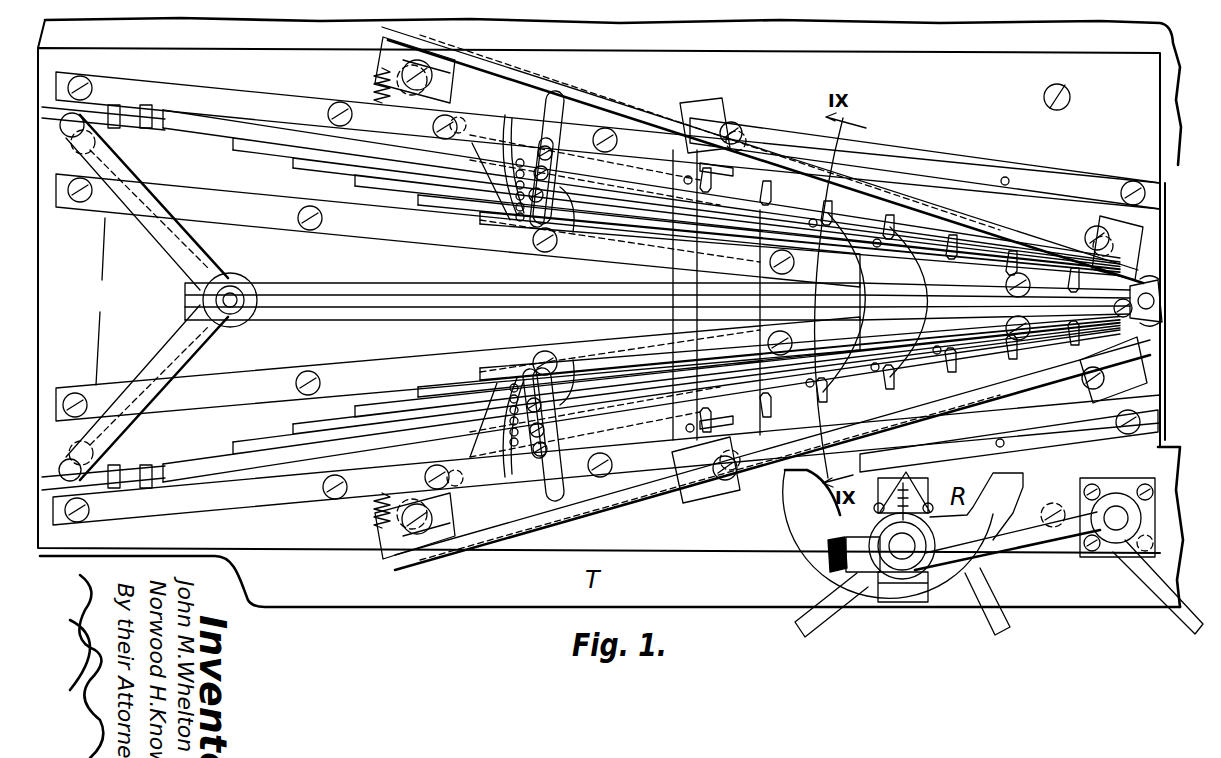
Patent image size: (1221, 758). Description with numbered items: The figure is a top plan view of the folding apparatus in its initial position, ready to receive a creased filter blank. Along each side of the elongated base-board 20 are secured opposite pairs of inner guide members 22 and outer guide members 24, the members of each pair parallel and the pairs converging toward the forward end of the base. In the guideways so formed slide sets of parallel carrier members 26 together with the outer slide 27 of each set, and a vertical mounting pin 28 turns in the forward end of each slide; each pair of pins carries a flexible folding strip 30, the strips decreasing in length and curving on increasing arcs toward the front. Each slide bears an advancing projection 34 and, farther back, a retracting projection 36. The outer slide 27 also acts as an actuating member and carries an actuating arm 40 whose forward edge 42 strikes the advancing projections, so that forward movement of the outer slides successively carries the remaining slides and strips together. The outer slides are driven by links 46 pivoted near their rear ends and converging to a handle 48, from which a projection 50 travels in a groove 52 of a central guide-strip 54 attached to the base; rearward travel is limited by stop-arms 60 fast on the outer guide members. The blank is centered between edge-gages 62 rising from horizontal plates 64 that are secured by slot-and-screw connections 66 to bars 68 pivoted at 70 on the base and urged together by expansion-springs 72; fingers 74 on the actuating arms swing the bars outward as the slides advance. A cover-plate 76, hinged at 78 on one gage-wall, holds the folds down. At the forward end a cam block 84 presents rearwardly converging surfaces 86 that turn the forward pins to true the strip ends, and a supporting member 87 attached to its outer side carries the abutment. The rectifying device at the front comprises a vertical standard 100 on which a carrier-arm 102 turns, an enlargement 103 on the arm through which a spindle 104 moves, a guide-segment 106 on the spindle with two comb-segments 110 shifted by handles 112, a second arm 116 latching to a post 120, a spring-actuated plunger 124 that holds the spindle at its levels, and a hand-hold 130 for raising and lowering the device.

The base-board 20 is at (716, 548).
The inner guide member 22 is at (98, 301).
The outer guide member 24 is at (218, 84).
The carrier member 26 is at (275, 148).
The outer slide 27 is at (637, 168).
The mounting pin 28 is at (872, 180).
The folding strip 30 is at (940, 322).
The advancing projection 34 is at (760, 400).
The retracting projection 36 is at (507, 302).
The actuating arm 40 is at (537, 213).
The forward edge 42 is at (571, 224).
The link 46 is at (180, 328).
The handle 48 is at (238, 282).
The projection 50 is at (238, 325).
The groove 52 is at (318, 294).
The central guide-strip 54 is at (323, 320).
The stop-arm 60 is at (492, 215).
The edge-gage 62 is at (968, 250).
The horizontal plate 64 is at (968, 172).
The slot-and-screw connection 66 is at (742, 124).
The bar 68 is at (597, 99).
The pivot 70 is at (451, 86).
The expansion-spring 72 is at (376, 88).
The finger 74 is at (558, 113).
The cover-plate 76 is at (663, 440).
The hinge 78 is at (748, 166).
The cam block 84 is at (1158, 298).
The cam surface 86 is at (1156, 282).
The supporting member 87 is at (1158, 310).
The vertical standard 100 is at (1117, 498).
The carrier-arm 102 is at (1047, 525).
The enlargement 103 is at (867, 565).
The spindle 104 is at (887, 545).
The guide-segment 106 is at (986, 558).
The comb-segment 110 is at (903, 487).
The handle 112 is at (995, 632).
The second arm 116 is at (1158, 572).
The post 120 is at (908, 596).
The spring-actuated plunger 124 is at (826, 560).
The hand-hold 130 is at (976, 525).